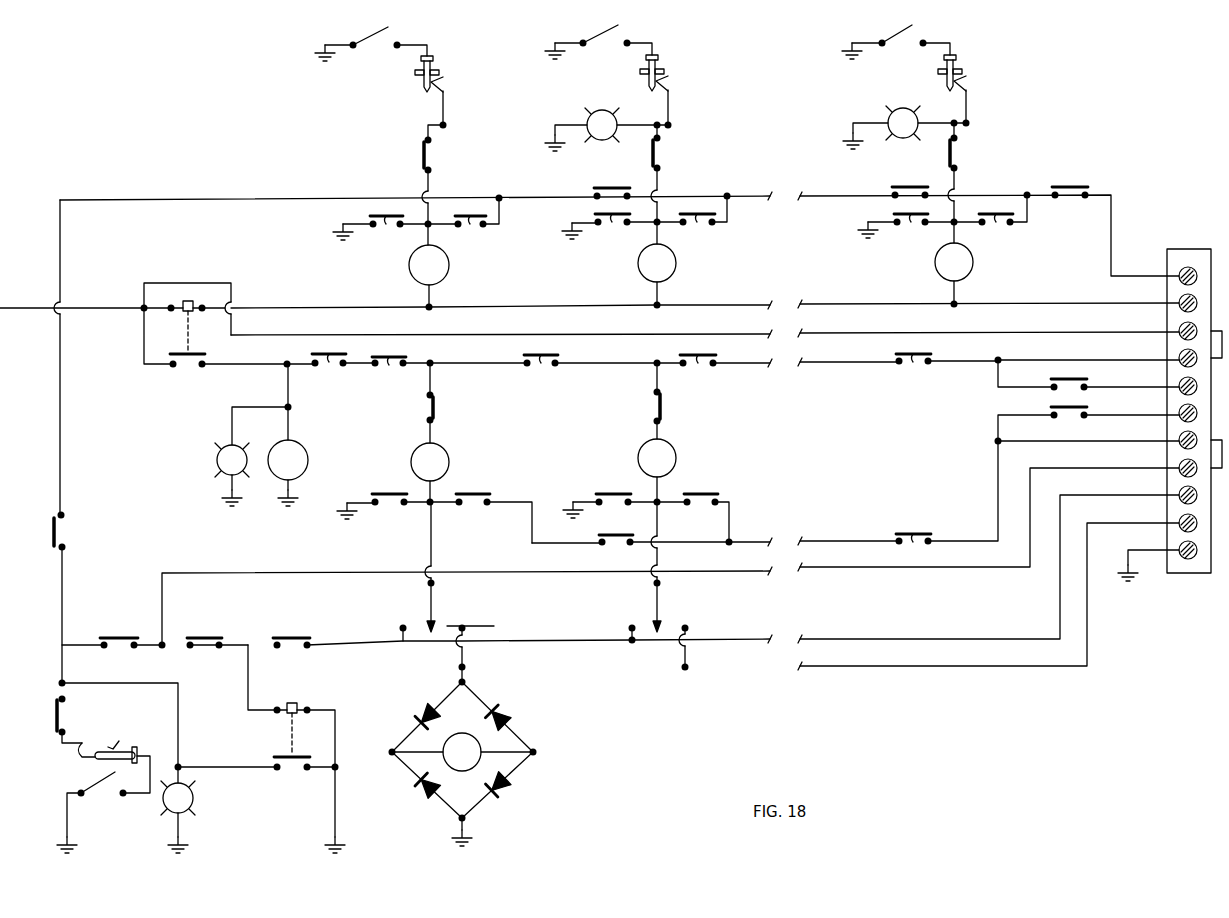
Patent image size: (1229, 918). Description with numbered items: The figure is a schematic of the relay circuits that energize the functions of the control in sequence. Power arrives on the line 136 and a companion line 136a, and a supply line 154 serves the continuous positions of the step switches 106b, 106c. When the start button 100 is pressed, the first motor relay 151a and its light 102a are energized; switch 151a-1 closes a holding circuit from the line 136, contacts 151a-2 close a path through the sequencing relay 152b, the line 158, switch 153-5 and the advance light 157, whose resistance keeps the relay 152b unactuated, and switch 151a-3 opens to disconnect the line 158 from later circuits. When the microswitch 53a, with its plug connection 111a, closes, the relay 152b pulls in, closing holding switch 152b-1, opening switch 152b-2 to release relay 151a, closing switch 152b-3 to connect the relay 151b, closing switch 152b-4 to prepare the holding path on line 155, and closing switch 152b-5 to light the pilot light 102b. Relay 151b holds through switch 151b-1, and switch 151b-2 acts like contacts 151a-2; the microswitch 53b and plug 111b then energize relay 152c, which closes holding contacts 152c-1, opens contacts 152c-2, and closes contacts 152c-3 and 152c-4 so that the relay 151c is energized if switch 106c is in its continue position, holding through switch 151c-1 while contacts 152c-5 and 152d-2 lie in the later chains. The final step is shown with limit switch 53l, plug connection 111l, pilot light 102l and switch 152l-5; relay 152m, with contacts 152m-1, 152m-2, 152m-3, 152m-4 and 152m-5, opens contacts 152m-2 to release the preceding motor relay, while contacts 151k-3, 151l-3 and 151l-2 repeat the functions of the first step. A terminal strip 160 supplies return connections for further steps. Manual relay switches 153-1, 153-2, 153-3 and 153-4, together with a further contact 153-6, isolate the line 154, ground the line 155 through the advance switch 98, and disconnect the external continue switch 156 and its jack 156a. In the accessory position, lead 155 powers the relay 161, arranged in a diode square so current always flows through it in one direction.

The microswitch 53a is at (371, 48).
The plug connection 111a is at (445, 103).
The relay contact 153-6 is at (423, 160).
The line 158 is at (87, 200).
The holding switch 152b-1 is at (380, 234).
The normally open contacts 151a-2 is at (468, 224).
The sequencing relay 152b is at (449, 262).
The line 136 is at (74, 308).
The conductor 136a is at (725, 305).
The start button 100 is at (179, 345).
The relay switch 151a-1 is at (330, 372).
The normally closed switch 152b-2 is at (450, 373).
The relay switch 152b-3 is at (430, 413).
The light 102a is at (219, 464).
The motor and speed control energizing relay 151a is at (300, 456).
The relay 151b is at (449, 458).
The switch 151b-1 is at (392, 494).
The switch 152b-4 is at (471, 494).
The switch 106b is at (492, 604).
The microswitch 53b is at (598, 47).
The plug connection 111b is at (670, 103).
The pilot light 102b is at (590, 114).
The switch 152b-5 is at (650, 146).
The switch 151a-3 is at (608, 190).
The holding contacts 152c-1 is at (609, 233).
The switch 151b-2 is at (697, 223).
The sequencing relay 152c is at (676, 260).
The contacts 152c-2 is at (591, 373).
The contacts 152d-2 is at (714, 373).
The contacts 152c-3 is at (657, 412).
The relay 151c is at (676, 456).
The holding switch 151c-1 is at (626, 494).
The contacts 152c-4 is at (708, 493).
The switch 152c-5 is at (622, 536).
The switch 106c is at (724, 616).
The final limit switch 53l is at (896, 47).
The plug connection 111l is at (970, 104).
The pilot light 102l is at (898, 114).
The normally open switch 152l-5 is at (956, 154).
The relay contacts 151k-3 is at (918, 191).
The relay contacts 151l-3 is at (1070, 190).
The relay contacts 152m-1 is at (906, 233).
The relay contacts 151l-2 is at (992, 222).
The relay 152m is at (973, 259).
The contacts 152m-2 is at (988, 373).
The contacts 152m-3 is at (1076, 380).
The contacts 152m-4 is at (1072, 408).
The line 155 is at (947, 541).
The contacts 152m-5 is at (917, 535).
The terminal strip 160 is at (1190, 576).
The supply line 154 is at (1062, 493).
The relay switch 153-5 is at (65, 522).
The relay switch 153-3 is at (122, 637).
The relay switch 153-2 is at (211, 636).
The relay switch 153-1 is at (299, 636).
The relay switch 153-4 is at (64, 713).
The jack 156a is at (106, 767).
The external continue switch 156 is at (92, 796).
The indicating pilot light 157 is at (195, 797).
The switch 98 is at (281, 747).
The relay 161 is at (478, 752).